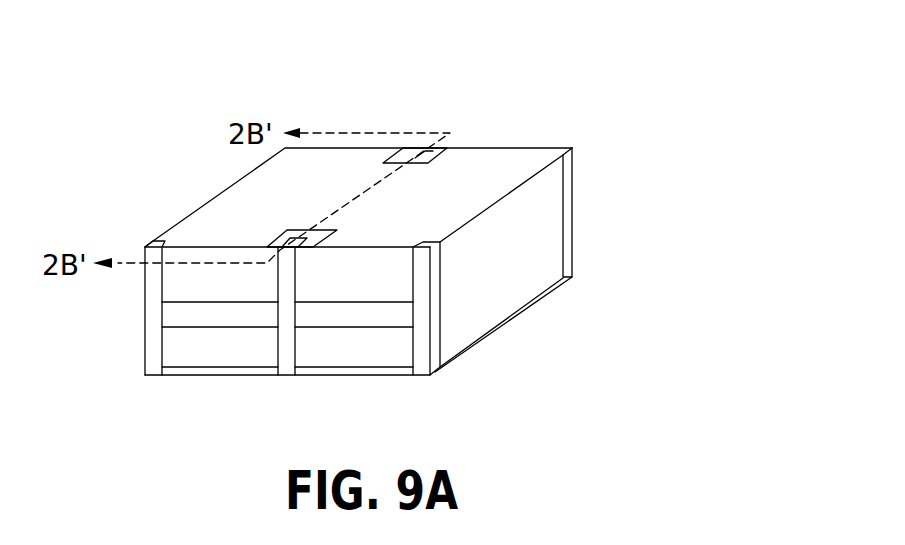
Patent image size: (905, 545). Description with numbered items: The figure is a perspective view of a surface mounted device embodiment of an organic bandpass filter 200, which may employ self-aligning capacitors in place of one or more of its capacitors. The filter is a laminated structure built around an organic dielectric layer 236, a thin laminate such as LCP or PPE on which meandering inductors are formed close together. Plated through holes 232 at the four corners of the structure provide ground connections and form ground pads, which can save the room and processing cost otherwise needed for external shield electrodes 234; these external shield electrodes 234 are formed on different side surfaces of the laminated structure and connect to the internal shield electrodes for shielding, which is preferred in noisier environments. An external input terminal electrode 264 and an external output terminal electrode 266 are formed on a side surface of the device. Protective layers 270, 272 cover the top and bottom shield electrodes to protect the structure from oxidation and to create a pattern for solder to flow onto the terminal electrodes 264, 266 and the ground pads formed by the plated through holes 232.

The organic bandpass filter 200 is at (636, 50).
The plated through holes 232 is at (145, 288).
The external shield electrodes 234 is at (497, 283).
The organic dielectric layer 236 is at (225, 318).
The external input terminal electrode 264 is at (278, 347).
The external output terminal electrode 266 is at (433, 153).
The protective layer 270 is at (503, 158).
The protective layer 272 is at (462, 338).